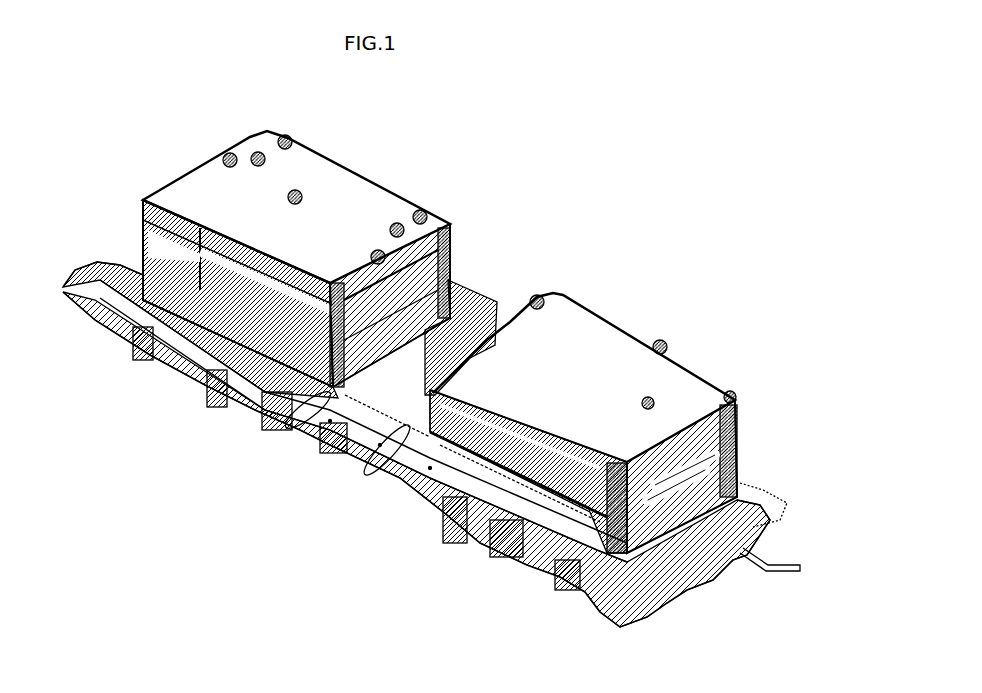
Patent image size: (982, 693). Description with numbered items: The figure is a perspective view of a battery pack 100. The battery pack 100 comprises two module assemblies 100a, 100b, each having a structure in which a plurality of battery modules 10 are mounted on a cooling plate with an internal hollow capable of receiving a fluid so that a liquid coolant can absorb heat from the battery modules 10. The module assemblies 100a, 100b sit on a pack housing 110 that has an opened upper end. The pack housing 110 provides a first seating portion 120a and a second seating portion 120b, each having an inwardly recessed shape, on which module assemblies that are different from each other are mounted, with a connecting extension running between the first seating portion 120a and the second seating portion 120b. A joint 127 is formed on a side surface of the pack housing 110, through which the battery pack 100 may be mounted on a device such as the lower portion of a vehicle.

The battery pack 100 is at (99, 127).
The module assembly 100a is at (607, 302).
The module assembly 100b is at (399, 179).
The battery module 10 is at (150, 242).
The pack housing 110 is at (180, 407).
The first seating portion 120a is at (368, 462).
The second seating portion 120b is at (298, 432).
The joint 127 is at (148, 362).